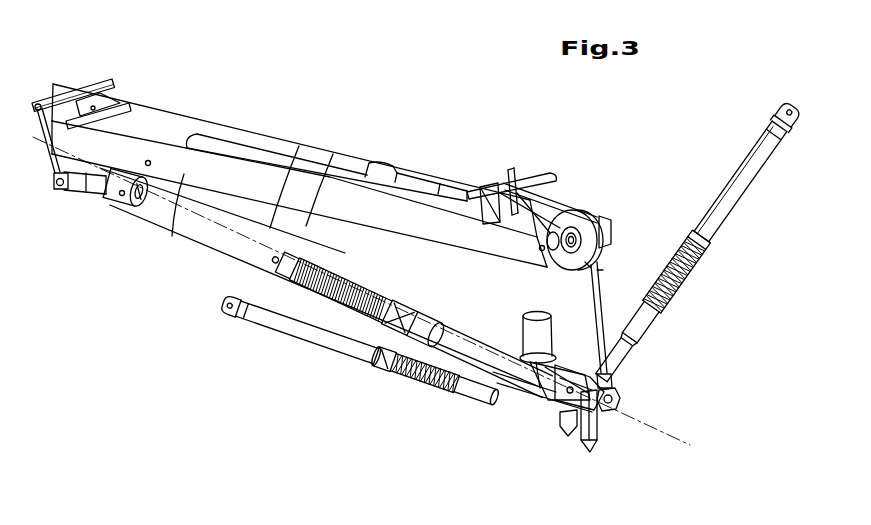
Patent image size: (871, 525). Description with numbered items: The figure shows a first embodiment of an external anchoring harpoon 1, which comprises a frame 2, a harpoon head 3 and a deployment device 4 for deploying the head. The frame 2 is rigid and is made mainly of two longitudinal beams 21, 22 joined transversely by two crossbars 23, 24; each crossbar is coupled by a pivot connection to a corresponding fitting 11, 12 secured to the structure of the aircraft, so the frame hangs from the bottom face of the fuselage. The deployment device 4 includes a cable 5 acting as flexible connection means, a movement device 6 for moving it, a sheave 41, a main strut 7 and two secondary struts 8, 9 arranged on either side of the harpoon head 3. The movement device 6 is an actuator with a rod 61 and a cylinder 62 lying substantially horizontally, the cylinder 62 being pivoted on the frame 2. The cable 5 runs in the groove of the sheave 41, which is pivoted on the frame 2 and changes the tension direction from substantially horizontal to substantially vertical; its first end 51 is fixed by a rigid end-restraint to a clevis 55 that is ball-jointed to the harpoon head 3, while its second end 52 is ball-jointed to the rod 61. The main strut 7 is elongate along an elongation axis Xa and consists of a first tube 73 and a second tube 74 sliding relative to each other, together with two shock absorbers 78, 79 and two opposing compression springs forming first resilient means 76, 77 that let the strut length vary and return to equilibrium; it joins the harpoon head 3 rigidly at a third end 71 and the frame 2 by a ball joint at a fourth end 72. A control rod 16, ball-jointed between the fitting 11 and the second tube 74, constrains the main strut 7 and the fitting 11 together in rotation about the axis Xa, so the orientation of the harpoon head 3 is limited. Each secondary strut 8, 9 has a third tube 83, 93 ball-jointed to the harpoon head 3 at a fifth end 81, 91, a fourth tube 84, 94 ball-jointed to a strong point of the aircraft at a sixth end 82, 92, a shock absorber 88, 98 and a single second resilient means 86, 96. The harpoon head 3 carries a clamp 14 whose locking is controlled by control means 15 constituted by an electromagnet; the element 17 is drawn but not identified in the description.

The external anchoring harpoon 1 is at (251, 471).
The frame 2 is at (183, 110).
The harpoon head 3 is at (580, 418).
The deployment device 4 is at (621, 205).
The cable 5 is at (593, 280).
The movement device 6 is at (416, 145).
The main strut 7 is at (150, 280).
The secondary strut 8 is at (396, 436).
The secondary strut 9 is at (710, 300).
The fitting 11 is at (100, 85).
The fitting 12 is at (545, 164).
The clamp 14 is at (600, 428).
The control means 15 is at (527, 345).
The control rod 16 is at (47, 162).
The pivot sleeve 17 is at (73, 184).
The longitudinal beam 21 is at (205, 124).
The longitudinal beam 22 is at (187, 173).
The crossbar 23 is at (112, 100).
The crossbar 24 is at (483, 185).
The sheave 41 is at (574, 220).
The first end 51 is at (614, 378).
The second end 52 is at (510, 188).
The clevis 55 is at (614, 399).
The rod 61 is at (432, 184).
The cylinder 62 is at (352, 163).
The third end 71 is at (507, 370).
The fourth end 72 is at (110, 192).
The first tube 73 is at (461, 333).
The second tube 74 is at (288, 200).
The first resilient means 76 is at (308, 234).
The first resilient means 77 is at (362, 265).
The shock absorber 78 is at (316, 215).
The shock absorber 79 is at (405, 288).
The fifth end 81 is at (550, 412).
The sixth end 82 is at (215, 318).
The third tube 83 is at (470, 400).
The fourth tube 84 is at (323, 345).
The second resilient means 86 is at (420, 380).
The shock absorber 88 is at (352, 358).
The fifth end 91 is at (588, 375).
The sixth end 92 is at (788, 106).
The third tube 93 is at (632, 357).
The fourth tube 94 is at (752, 146).
The second resilient means 96 is at (718, 270).
The shock absorber 98 is at (686, 238).
The elongation axis Xa is at (247, 244).